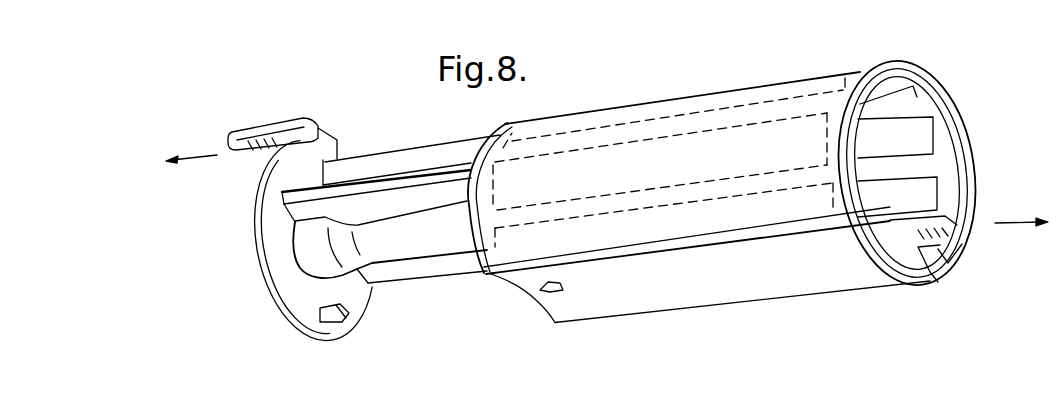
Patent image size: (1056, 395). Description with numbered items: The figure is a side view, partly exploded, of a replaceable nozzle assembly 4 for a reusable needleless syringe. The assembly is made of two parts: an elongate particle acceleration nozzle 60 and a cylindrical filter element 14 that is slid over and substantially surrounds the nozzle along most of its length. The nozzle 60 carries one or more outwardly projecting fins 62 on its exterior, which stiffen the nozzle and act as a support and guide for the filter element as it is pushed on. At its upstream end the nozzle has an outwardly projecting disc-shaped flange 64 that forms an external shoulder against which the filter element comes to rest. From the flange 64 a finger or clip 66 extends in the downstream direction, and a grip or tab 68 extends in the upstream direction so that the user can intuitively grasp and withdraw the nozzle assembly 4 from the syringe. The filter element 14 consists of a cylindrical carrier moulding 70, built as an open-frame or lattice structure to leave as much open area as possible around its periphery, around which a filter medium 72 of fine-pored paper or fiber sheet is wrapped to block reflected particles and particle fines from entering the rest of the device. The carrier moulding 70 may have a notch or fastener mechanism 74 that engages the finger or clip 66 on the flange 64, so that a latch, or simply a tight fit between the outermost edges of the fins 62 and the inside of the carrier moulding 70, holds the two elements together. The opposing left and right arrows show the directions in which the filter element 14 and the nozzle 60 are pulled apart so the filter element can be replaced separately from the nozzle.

The replaceable nozzle assembly 4 is at (259, 106).
The cylindrical filter element 14 is at (741, 76).
The elongate particle acceleration nozzle 60 is at (430, 242).
The outwardly projecting fins 62 is at (383, 188).
The disc-shaped flange 64 is at (271, 268).
The finger or clip 66 is at (345, 313).
The grip or tab 68 is at (241, 160).
The cylindrical carrier moulding 70 is at (927, 107).
The filter medium 72 is at (669, 107).
The notch or fastener mechanism 74 is at (541, 290).